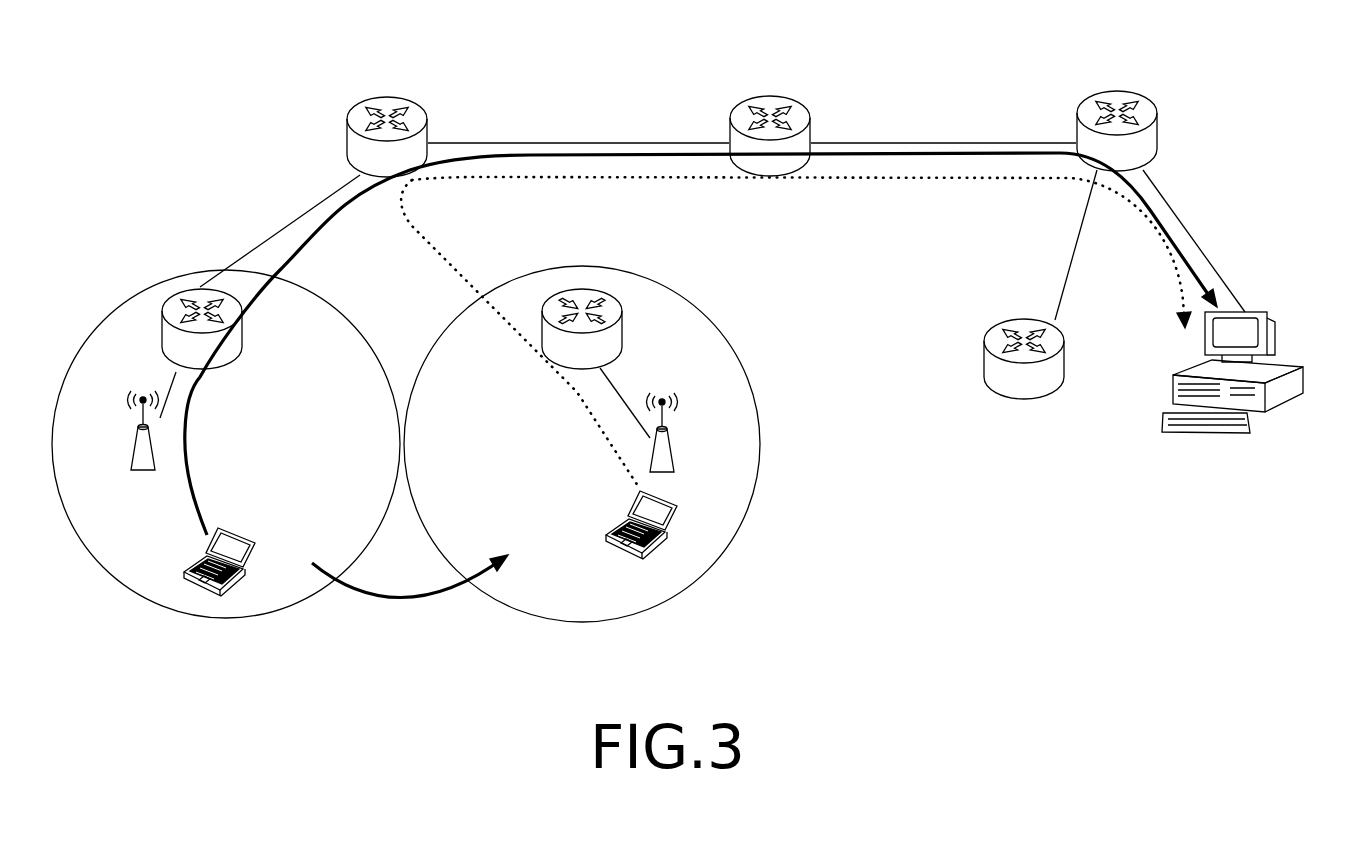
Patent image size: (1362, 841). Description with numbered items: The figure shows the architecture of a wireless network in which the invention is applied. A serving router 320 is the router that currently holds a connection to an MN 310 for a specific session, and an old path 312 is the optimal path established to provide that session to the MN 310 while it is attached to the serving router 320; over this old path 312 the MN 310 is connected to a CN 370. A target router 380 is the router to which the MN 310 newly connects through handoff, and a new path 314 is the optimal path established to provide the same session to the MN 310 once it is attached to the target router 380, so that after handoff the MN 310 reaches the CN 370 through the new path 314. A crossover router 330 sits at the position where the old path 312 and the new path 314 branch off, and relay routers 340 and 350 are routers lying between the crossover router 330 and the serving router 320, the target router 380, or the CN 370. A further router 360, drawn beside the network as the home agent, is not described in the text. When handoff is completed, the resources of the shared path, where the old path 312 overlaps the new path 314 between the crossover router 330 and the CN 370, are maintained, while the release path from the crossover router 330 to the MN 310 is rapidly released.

The MN 310 is at (240, 527).
The old path 312 is at (598, 150).
The new path 314 is at (452, 262).
The serving router 320 is at (243, 320).
The crossover router 330 is at (387, 97).
The relay router 340 is at (770, 96).
The relay router 350 is at (1117, 90).
The home agent router 360 is at (1024, 320).
The CN 370 is at (1277, 333).
The target router 380 is at (622, 320).